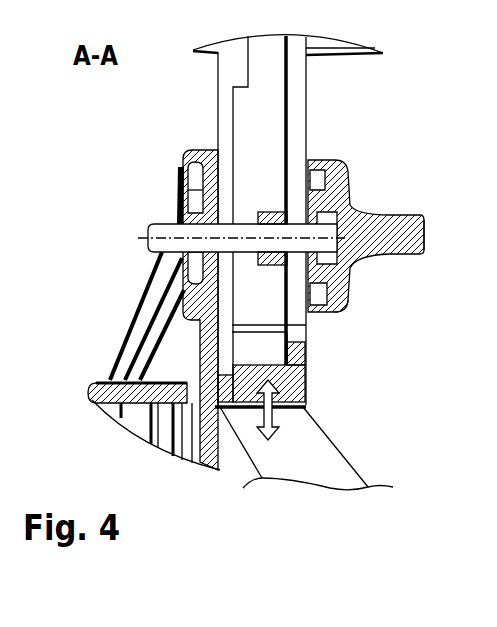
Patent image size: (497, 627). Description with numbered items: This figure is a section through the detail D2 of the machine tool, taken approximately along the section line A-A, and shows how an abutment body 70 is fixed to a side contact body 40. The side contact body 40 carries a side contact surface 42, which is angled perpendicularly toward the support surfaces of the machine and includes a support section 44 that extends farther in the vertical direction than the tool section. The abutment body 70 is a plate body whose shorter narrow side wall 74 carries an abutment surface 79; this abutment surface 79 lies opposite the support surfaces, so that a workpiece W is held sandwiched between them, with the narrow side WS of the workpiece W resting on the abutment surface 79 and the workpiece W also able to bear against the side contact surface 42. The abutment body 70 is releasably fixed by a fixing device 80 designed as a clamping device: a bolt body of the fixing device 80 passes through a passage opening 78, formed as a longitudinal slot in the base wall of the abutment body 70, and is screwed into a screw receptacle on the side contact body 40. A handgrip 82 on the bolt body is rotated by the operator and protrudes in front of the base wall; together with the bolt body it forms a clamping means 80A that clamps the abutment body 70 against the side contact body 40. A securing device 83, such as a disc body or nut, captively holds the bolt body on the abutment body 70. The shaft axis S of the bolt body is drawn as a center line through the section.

The side contact body 40 is at (185, 178).
The side contact surface 42 is at (222, 462).
The support section 44 is at (187, 152).
The abutment body 70 is at (312, 140).
The narrow side wall 74 is at (190, 378).
The passage opening 78 is at (303, 102).
The abutment surface 79 is at (296, 430).
The fixing device 80 is at (358, 196).
The clamping means 80A is at (355, 292).
The handgrip 82 is at (425, 235).
The securing device 83 is at (266, 211).
The shaft S is at (147, 232).
The workpiece W is at (333, 476).
The narrow side WS is at (311, 406).
The detail D2 is at (355, 48).